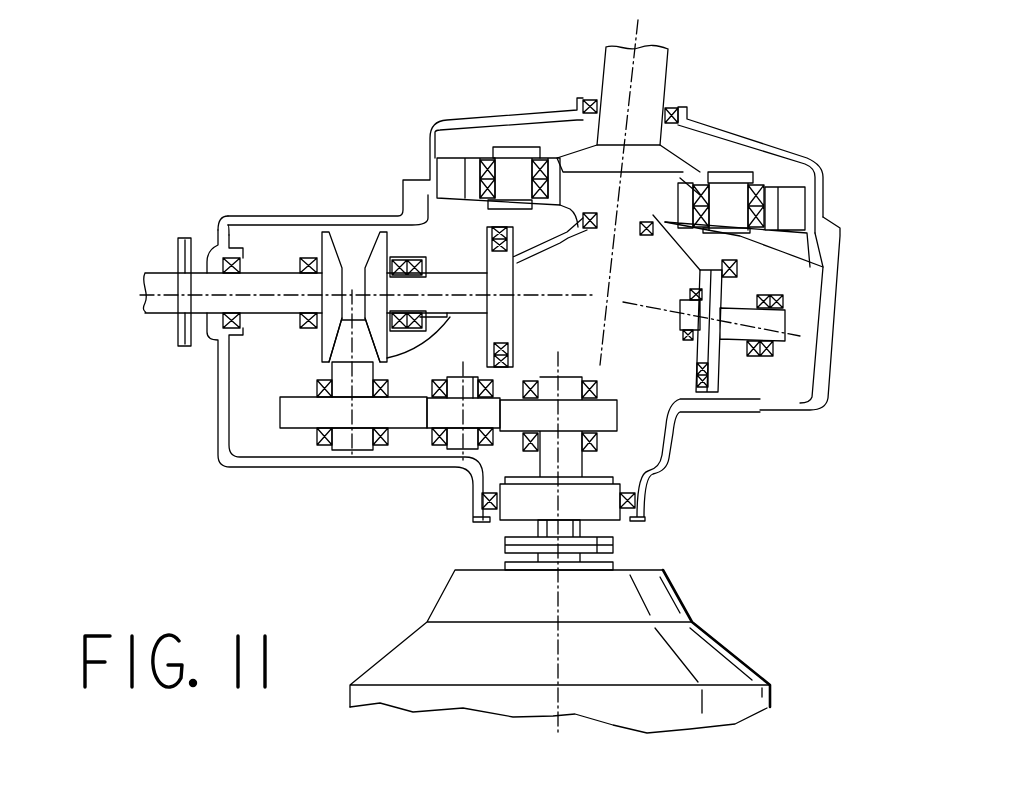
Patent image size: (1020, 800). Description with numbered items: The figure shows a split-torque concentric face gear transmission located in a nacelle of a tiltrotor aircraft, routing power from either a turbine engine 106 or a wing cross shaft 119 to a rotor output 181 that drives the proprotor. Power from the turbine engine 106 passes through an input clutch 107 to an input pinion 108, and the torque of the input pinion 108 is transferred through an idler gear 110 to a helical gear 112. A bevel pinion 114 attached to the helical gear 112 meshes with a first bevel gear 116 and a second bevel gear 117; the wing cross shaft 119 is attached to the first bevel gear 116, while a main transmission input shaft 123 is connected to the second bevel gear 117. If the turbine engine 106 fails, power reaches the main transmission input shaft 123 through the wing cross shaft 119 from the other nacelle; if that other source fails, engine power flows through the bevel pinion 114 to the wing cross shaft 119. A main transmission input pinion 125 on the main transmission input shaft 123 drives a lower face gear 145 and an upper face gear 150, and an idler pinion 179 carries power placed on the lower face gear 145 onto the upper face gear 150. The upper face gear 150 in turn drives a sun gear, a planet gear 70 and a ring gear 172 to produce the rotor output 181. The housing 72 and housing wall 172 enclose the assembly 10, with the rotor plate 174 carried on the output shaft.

The gear housing assembly 10 is at (773, 187).
The planet gear 70 is at (473, 153).
The housing cover 72 is at (436, 132).
The turbine engine 106 is at (745, 660).
The input clutch 107 is at (613, 545).
The input pinion 108 is at (618, 408).
The idler gear 110 is at (427, 430).
The helical gear 112 is at (310, 428).
The bevel pinion 114 is at (323, 341).
The first bevel gear 116 is at (320, 247).
The second bevel gear 117 is at (383, 233).
The wing cross shaft 119 is at (160, 272).
The main transmission input shaft 123 is at (282, 397).
The main transmission input pinion 125 is at (478, 345).
The lower face gear 145 is at (720, 375).
The upper face gear 150 is at (563, 237).
The ring gear 172 is at (826, 219).
The rotor plate 174 is at (680, 160).
The idler pinion 179 is at (562, 152).
The rotor output 181 is at (668, 65).